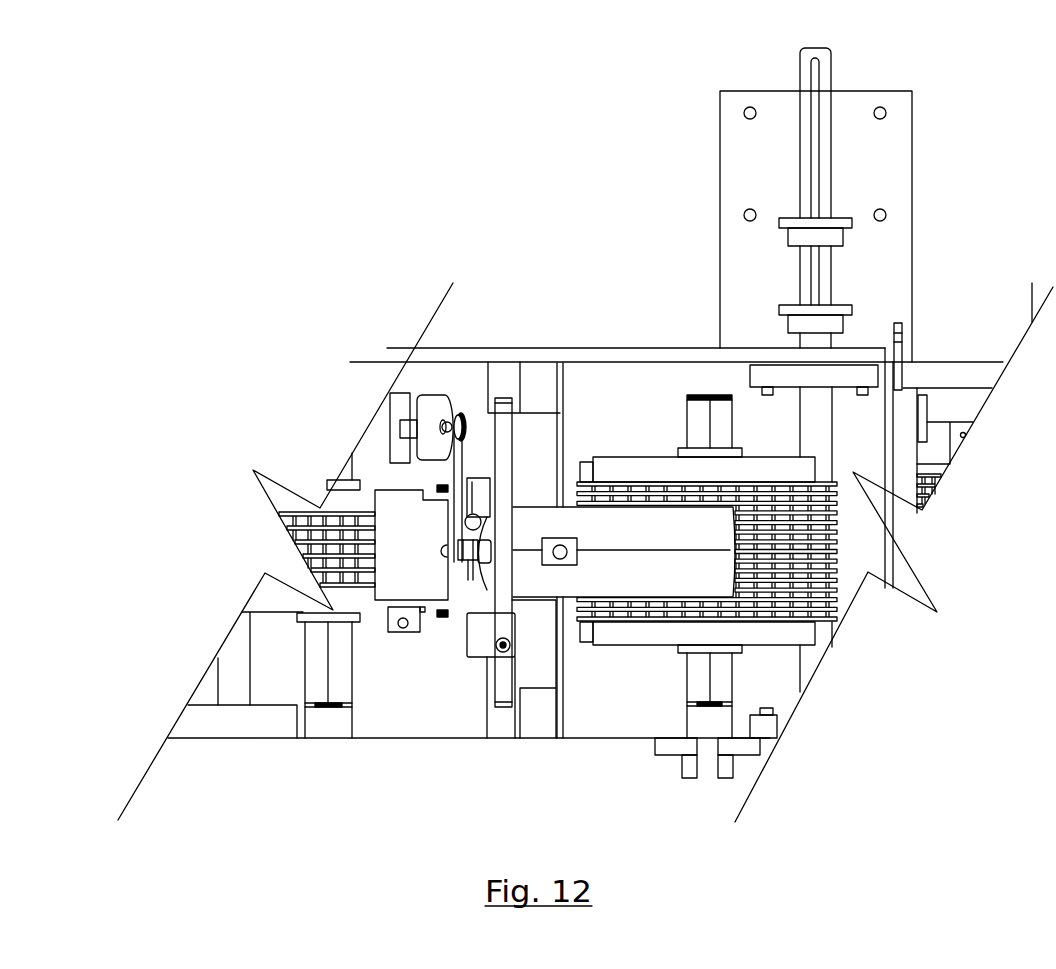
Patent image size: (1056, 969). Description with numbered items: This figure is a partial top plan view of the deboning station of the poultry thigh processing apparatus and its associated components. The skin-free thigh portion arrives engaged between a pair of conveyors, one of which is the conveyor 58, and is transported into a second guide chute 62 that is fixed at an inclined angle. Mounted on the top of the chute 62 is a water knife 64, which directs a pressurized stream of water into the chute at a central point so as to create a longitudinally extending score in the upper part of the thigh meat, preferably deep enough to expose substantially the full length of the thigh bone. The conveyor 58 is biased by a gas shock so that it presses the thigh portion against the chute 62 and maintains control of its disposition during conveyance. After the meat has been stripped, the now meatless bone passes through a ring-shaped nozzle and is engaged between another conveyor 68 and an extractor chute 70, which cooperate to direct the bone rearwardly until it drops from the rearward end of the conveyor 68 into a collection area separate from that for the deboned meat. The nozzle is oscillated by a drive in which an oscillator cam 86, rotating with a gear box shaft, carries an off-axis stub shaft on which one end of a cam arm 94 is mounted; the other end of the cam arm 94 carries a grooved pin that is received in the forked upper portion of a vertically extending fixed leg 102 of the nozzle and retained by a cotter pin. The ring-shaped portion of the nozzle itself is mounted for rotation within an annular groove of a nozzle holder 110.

The conveyor 58 is at (800, 570).
The second guide chute 62 is at (627, 525).
The water knife 64 is at (562, 538).
The conveyor 68 is at (310, 568).
The extractor chute 70 is at (395, 583).
The oscillator cam 86 is at (430, 403).
The cam arm 94 is at (458, 462).
The fixed leg 102 is at (465, 537).
The nozzle holder 110 is at (478, 602).